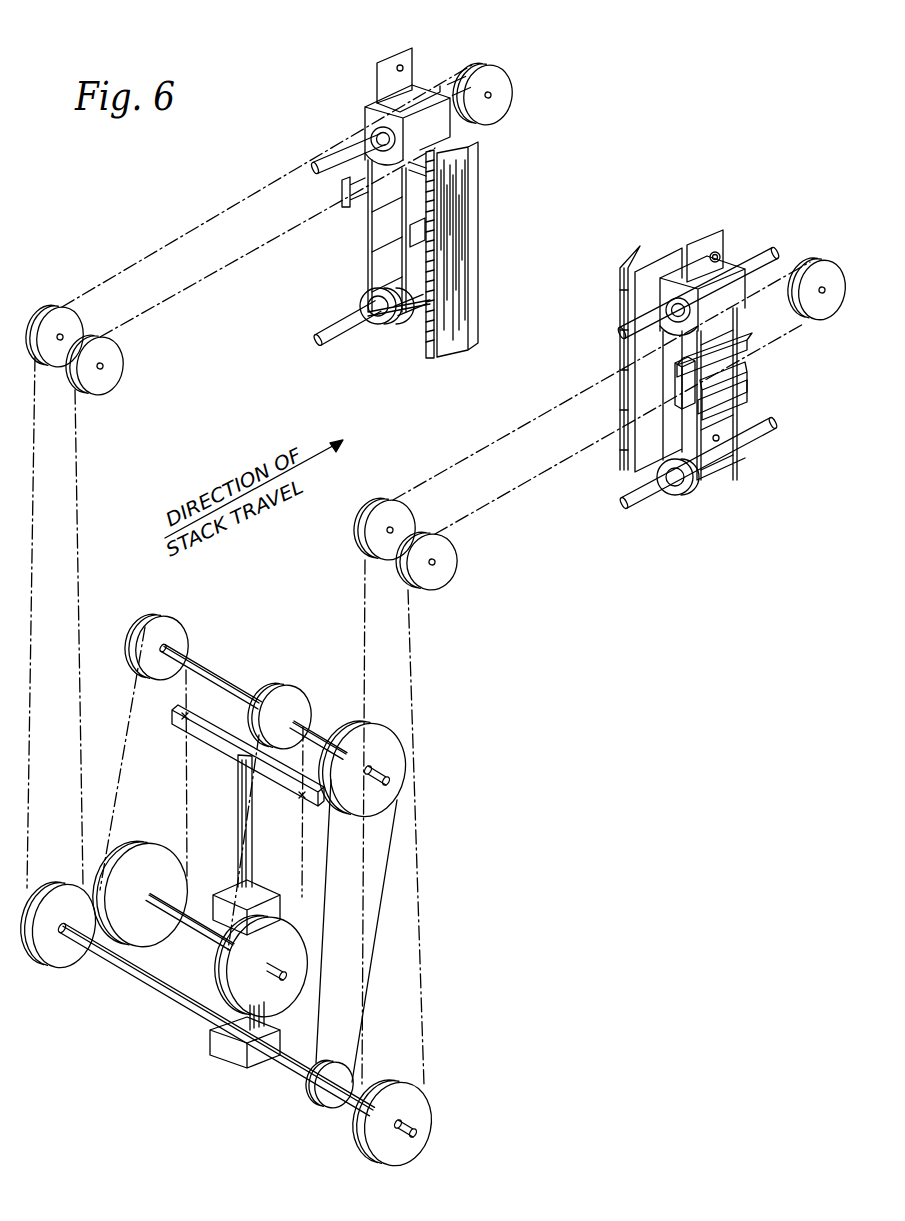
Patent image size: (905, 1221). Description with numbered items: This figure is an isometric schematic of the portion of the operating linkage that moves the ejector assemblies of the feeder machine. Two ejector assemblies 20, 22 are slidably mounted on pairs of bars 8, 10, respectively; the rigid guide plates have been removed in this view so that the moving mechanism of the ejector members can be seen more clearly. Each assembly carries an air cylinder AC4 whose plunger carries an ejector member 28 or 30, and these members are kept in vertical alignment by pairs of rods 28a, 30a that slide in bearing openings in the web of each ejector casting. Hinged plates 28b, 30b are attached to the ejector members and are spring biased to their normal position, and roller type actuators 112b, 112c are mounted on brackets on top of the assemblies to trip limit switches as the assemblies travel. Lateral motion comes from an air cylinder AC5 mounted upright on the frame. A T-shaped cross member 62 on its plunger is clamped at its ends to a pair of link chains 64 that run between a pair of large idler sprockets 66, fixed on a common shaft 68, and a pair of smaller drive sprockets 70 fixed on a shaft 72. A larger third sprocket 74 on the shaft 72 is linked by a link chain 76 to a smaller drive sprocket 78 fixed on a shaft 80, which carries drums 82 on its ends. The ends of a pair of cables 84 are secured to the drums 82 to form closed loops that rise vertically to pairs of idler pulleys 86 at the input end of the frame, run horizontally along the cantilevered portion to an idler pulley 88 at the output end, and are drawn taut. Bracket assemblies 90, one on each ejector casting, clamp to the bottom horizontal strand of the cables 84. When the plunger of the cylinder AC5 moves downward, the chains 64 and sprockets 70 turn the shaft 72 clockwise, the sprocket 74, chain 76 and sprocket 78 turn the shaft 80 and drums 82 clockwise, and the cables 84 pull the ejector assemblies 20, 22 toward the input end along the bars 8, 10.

The bar 8 is at (620, 333).
The bar 10 is at (311, 167).
The ejector assembly 20 is at (689, 505).
The ejector assembly 22 is at (393, 335).
The ejector member 28 is at (668, 247).
The rods 28a is at (723, 333).
The hinged plate 28b is at (632, 262).
The ejector member 30 is at (478, 137).
The rods 30a is at (372, 137).
The hinged plate 30b is at (460, 350).
The T-shaped cross member 62 is at (231, 752).
The link chains 64 is at (118, 769).
The idler sprockets 66 is at (230, 972).
The shaft 68 is at (193, 917).
The drive sprockets 70 is at (185, 630).
The shaft 72 is at (223, 678).
The sprocket 74 is at (388, 727).
The link chain 76 is at (375, 920).
The drive sprocket 78 is at (332, 1110).
The shaft 80 is at (153, 988).
The drums 82 is at (58, 963).
The cables 84 is at (163, 243).
The idler pulleys 86 is at (82, 322).
The idler pulley 88 is at (504, 80).
The bracket assemblies 90 is at (343, 193).
The roller type actuator 112b is at (722, 252).
The roller type actuator 112c is at (388, 60).
The air cylinder AC4 is at (417, 223).
The air cylinder AC5 is at (252, 1027).